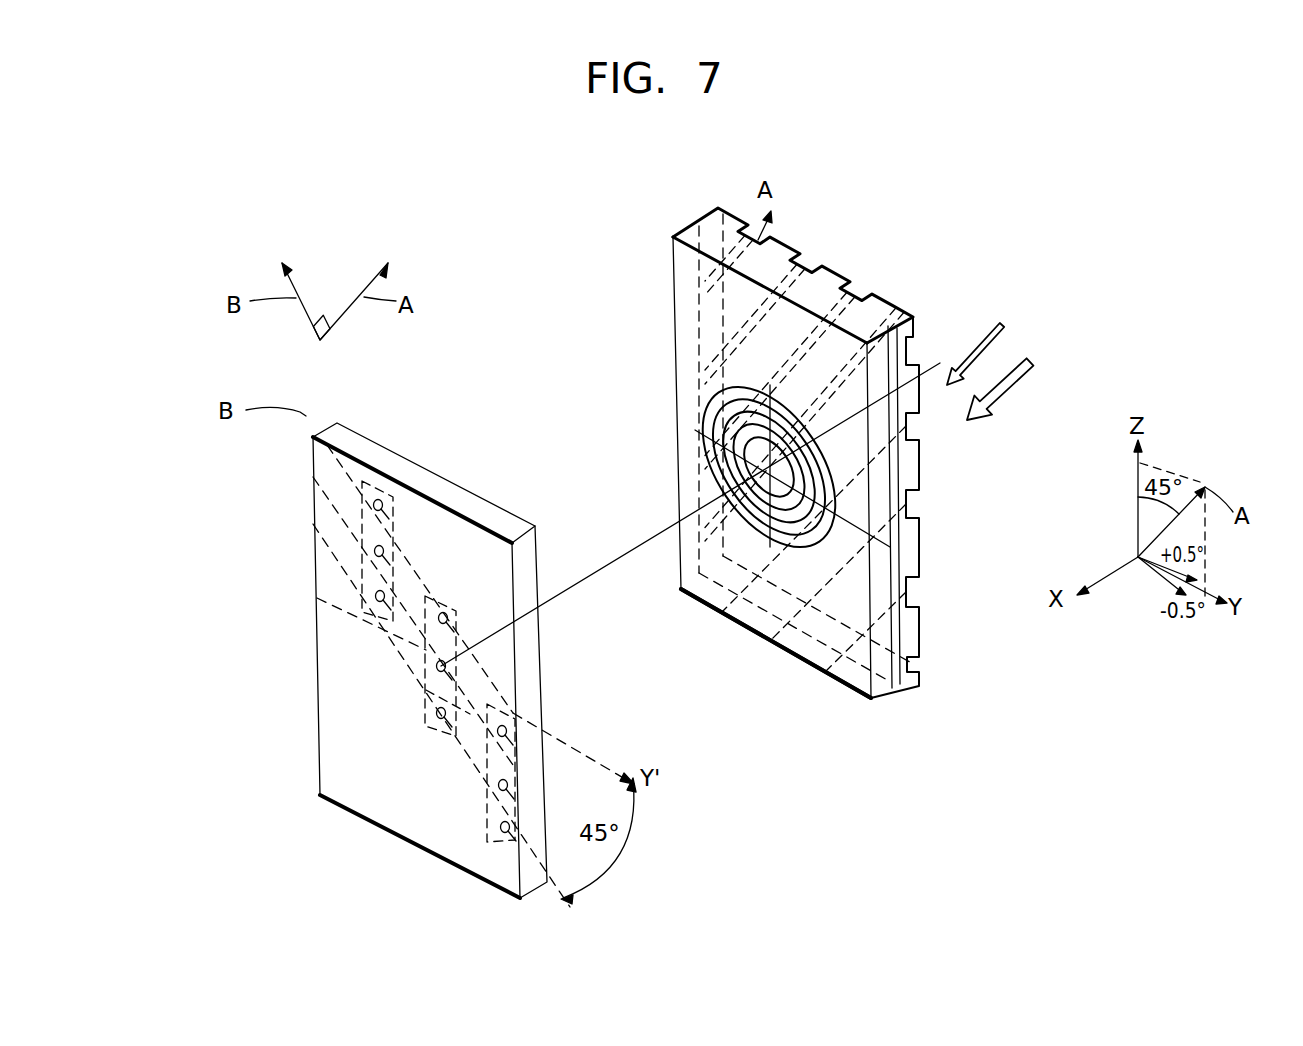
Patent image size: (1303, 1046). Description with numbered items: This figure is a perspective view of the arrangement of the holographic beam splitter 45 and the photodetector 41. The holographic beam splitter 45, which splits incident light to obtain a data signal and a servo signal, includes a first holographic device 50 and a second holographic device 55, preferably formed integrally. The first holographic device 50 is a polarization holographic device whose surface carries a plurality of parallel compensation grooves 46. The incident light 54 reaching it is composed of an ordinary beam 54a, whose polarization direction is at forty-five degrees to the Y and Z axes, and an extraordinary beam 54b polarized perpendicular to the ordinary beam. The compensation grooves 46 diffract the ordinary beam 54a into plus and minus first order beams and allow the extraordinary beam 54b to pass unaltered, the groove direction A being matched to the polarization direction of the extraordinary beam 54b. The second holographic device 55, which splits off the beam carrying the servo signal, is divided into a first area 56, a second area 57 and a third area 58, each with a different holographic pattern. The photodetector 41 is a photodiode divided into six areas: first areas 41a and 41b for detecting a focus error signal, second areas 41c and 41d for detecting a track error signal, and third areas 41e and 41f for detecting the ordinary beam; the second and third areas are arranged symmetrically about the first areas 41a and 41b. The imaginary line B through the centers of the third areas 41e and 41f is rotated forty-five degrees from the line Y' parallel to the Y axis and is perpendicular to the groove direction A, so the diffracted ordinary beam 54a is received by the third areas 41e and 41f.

The photodetector 41 is at (478, 494).
The first area 41a is at (436, 666).
The first area 41b is at (465, 688).
The second area 41c is at (450, 612).
The second area 41d is at (441, 716).
The third area 41e is at (373, 505).
The third area 41f is at (507, 845).
The holographic beam splitter 45 is at (816, 468).
The compensation grooves 46 is at (869, 308).
The first holographic device 50 is at (922, 658).
The incident light 54 is at (1085, 218).
The ordinary beam 54a is at (1030, 360).
The extraordinary beam 54b is at (1002, 323).
The second holographic device 55 is at (853, 680).
The first area 56 is at (835, 493).
The second area 57 is at (722, 424).
The third area 58 is at (758, 460).